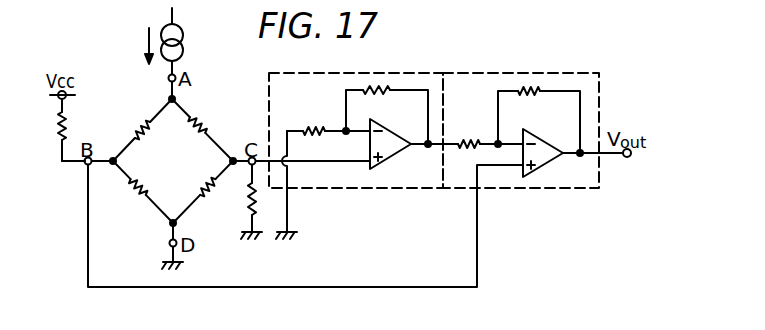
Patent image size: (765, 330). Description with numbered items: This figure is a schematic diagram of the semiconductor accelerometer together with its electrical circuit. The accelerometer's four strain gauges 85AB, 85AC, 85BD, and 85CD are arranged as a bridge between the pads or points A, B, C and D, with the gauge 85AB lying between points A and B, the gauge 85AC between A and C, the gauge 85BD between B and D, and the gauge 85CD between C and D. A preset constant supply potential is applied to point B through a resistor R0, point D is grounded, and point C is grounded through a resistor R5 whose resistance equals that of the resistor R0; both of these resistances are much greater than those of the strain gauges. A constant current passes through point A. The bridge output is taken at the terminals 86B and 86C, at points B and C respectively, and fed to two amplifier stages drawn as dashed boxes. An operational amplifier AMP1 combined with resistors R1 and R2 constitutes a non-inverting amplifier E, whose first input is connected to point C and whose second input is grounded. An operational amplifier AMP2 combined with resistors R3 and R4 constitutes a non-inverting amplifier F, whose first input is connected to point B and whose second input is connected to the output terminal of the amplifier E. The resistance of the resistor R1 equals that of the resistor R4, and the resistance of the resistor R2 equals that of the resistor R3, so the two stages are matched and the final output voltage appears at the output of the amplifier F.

The strain gauge 85AB is at (141, 125).
The strain gauge 85AC is at (208, 114).
The strain gauge 85BD is at (165, 167).
The strain gauge 85CD is at (209, 197).
The bridge output terminal B 86B is at (113, 165).
The bridge output terminal C 86C is at (237, 158).
The resistor R0 is at (48, 130).
The resistor R1 is at (323, 173).
The resistor R2 is at (387, 115).
The resistor R3 is at (490, 133).
The resistor R4 is at (539, 120).
The resistor R5 is at (261, 202).
The operational amplifier AMP1 is at (393, 167).
The operational amplifier AMP2 is at (537, 173).
The non-inverting amplifier E is at (333, 190).
The non-inverting amplifier F is at (494, 190).